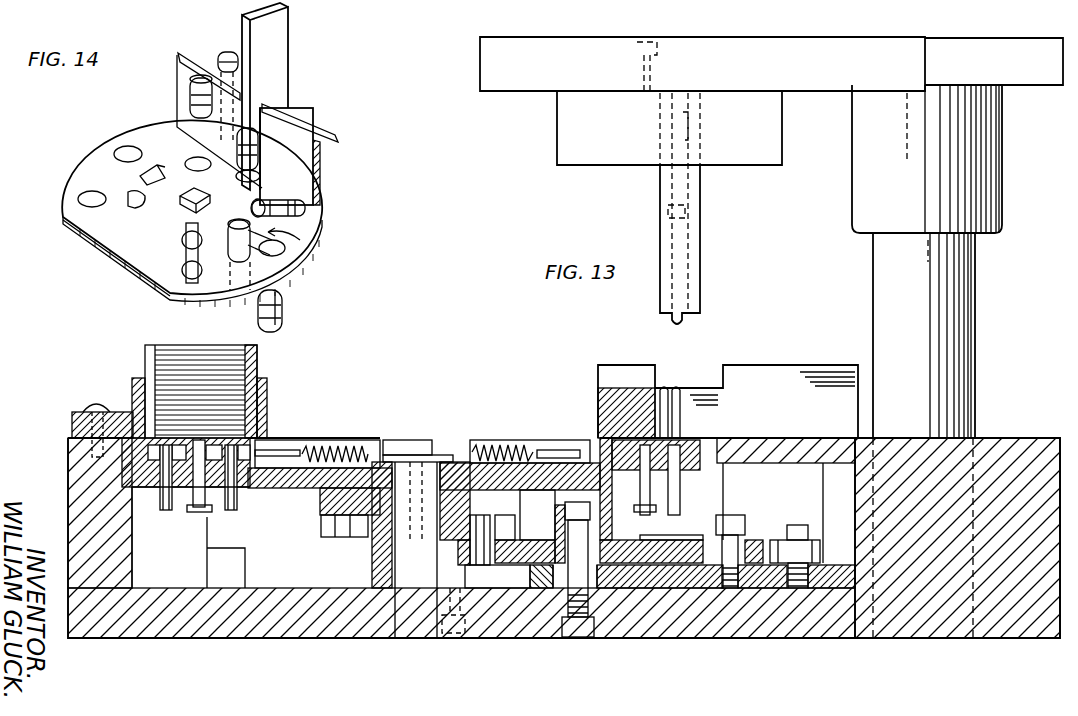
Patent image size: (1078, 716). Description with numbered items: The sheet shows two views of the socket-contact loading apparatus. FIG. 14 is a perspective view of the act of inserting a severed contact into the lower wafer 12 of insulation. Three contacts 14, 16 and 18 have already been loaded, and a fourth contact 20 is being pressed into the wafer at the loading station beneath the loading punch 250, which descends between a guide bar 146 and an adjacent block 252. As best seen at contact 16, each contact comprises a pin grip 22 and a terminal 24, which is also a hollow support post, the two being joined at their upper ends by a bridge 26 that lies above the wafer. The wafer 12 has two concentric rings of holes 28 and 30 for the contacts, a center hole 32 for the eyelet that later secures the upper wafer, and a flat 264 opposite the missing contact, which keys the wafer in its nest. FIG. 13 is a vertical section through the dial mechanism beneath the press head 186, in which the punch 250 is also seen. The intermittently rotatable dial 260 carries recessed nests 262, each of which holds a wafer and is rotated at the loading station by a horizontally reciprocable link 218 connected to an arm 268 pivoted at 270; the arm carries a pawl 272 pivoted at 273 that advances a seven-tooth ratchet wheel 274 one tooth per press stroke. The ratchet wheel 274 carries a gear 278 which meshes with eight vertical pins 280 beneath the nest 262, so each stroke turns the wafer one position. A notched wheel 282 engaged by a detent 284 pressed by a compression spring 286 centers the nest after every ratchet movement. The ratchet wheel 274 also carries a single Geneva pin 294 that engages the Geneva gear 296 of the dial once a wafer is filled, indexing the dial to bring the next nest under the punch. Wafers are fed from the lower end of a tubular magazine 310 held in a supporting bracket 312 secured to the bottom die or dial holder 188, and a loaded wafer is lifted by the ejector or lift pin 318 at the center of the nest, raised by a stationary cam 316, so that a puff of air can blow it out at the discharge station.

In FIG. 13, the lower wafer of insulation 12 is at (680, 438).
In FIG. 14, the lower wafer of insulation 12 is at (318, 276).
In FIG. 14, the metal contact 14 is at (184, 252).
In FIG. 14, the metal contact 16 is at (292, 241).
In FIG. 14, the metal contact 18 is at (282, 218).
In FIG. 14, the fourth contact 20 is at (262, 147).
In FIG. 14, the pin grip 22 is at (190, 97).
In FIG. 14, the terminal 24 is at (227, 53).
In FIG. 14, the bridge 26 is at (256, 255).
In FIG. 14, the ring of holes 28 is at (136, 210).
In FIG. 14, the ring of holes 30 is at (80, 200).
In FIG. 14, the center hole 32 is at (199, 194).
In FIG. 14, the bar 146 is at (180, 55).
In FIG. 13, the press head 186 is at (855, 45).
In FIG. 13, the bottom die or dial holder 188 is at (1018, 438).
In FIG. 13, the horizontally reciprocable link 218 is at (782, 540).
In FIG. 13, the post 250 is at (694, 248).
In FIG. 14, the post 250 is at (288, 52).
In FIG. 13, the block 252 is at (690, 412).
In FIG. 14, the block 252 is at (320, 165).
In FIG. 13, the dial 260 is at (305, 490).
In FIG. 13, the nest 262 is at (152, 505).
In FIG. 14, the flat 264 is at (115, 258).
In FIG. 13, the arm 268 is at (702, 598).
In FIG. 13, the pivot 270 is at (590, 640).
In FIG. 13, the pawl 272 is at (660, 536).
In FIG. 13, the pivot 273 is at (735, 516).
In FIG. 13, the ratchet wheel 274 is at (637, 535).
In FIG. 13, the gear 278 is at (560, 505).
In FIG. 13, the vertical pins 280 is at (236, 511).
In FIG. 13, the notched wheel 282 is at (272, 440).
In FIG. 13, the detent 284 is at (290, 441).
In FIG. 13, the compression spring 286 is at (350, 441).
In FIG. 13, the Geneva tooth or pin 294 is at (480, 565).
In FIG. 13, the Geneva gear 296 is at (336, 530).
In FIG. 13, the magazine 310 is at (262, 356).
In FIG. 13, the supporting bracket 312 is at (133, 395).
In FIG. 13, the cam 316 is at (238, 565).
In FIG. 13, the ejector or lift pin 318 is at (200, 514).